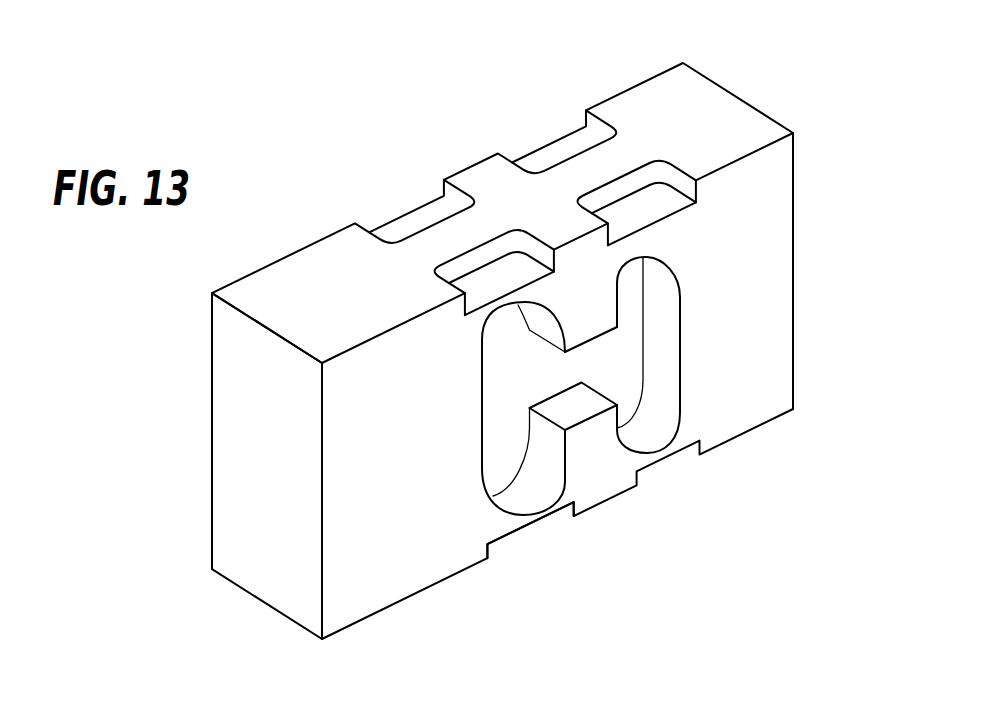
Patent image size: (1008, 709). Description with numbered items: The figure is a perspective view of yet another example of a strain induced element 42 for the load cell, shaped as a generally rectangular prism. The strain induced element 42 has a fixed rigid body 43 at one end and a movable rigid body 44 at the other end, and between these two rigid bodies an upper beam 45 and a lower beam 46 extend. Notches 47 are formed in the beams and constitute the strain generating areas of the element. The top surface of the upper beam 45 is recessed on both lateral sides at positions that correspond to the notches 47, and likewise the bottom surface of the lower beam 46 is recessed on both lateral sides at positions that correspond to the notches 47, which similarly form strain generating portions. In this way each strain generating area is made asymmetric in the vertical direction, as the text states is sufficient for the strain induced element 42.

The strain induced element 42 is at (803, 125).
The fixed rigid body 43 is at (343, 493).
The movable rigid body 44 is at (778, 297).
The upper beam 45 is at (580, 320).
The lower beam 46 is at (595, 485).
The notches 47 is at (655, 290).